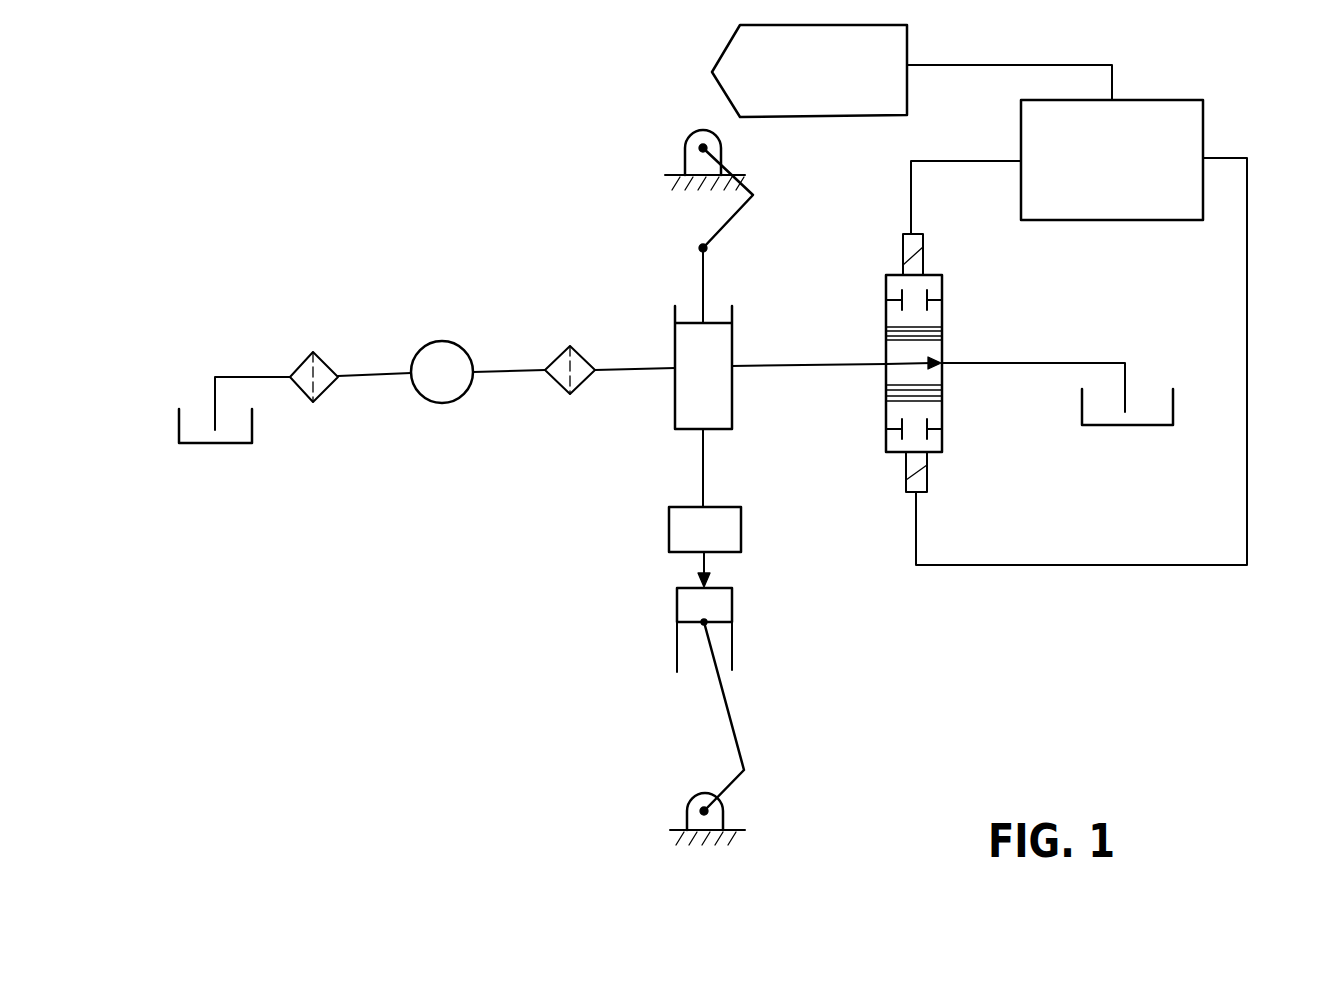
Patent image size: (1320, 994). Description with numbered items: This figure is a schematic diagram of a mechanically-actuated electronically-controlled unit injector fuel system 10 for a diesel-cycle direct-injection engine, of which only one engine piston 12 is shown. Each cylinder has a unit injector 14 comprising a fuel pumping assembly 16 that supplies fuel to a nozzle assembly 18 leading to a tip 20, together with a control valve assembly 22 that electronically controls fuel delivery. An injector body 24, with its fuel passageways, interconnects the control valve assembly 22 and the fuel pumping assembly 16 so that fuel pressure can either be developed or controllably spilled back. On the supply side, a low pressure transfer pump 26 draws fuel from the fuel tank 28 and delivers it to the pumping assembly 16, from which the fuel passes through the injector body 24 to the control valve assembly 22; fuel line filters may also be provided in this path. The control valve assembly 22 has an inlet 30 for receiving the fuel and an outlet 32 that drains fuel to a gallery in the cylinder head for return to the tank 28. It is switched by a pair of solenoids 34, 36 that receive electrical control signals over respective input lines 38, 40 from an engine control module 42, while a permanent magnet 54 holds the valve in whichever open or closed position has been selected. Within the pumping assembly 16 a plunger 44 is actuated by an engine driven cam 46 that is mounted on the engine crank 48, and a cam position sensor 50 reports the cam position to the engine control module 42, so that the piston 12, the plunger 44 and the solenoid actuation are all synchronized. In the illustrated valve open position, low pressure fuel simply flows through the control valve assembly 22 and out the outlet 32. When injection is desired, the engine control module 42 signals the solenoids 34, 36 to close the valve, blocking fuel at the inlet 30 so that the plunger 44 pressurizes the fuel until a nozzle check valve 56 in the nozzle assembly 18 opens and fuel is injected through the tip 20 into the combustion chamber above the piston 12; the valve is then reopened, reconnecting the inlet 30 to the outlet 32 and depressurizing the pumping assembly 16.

The injector fuel system 10 is at (563, 130).
The engine piston 12 is at (732, 606).
The unit injector 14 is at (838, 300).
The fuel pumping assembly 16 is at (675, 345).
The nozzle assembly 18 is at (703, 458).
The tip 20 is at (707, 575).
The control valve assembly 22 is at (942, 287).
The injector body 24 is at (743, 370).
The low pressure transfer pump 26 is at (465, 345).
The fuel tank 28 is at (178, 432).
The inlet 30 is at (882, 365).
The outlet 32 is at (1000, 363).
The first solenoid 34 is at (923, 240).
The second solenoid 36 is at (927, 479).
The input line 38 is at (963, 160).
The input line 40 is at (960, 565).
The engine control module 42 is at (1203, 122).
The plunger 44 is at (700, 273).
The cam 46 is at (743, 187).
The engine crank 48 is at (727, 790).
The cam position sensor 50 is at (760, 26).
The permanent magnet 54 is at (942, 397).
The nozzle check valve 56 is at (741, 523).